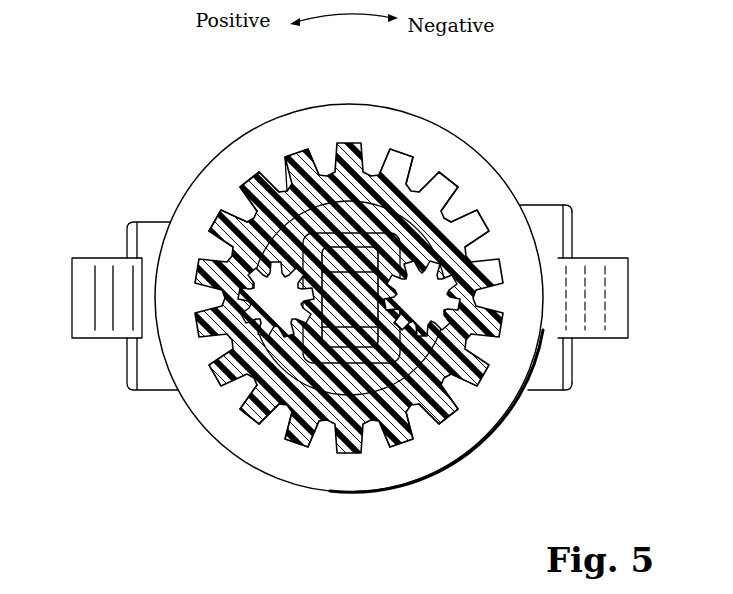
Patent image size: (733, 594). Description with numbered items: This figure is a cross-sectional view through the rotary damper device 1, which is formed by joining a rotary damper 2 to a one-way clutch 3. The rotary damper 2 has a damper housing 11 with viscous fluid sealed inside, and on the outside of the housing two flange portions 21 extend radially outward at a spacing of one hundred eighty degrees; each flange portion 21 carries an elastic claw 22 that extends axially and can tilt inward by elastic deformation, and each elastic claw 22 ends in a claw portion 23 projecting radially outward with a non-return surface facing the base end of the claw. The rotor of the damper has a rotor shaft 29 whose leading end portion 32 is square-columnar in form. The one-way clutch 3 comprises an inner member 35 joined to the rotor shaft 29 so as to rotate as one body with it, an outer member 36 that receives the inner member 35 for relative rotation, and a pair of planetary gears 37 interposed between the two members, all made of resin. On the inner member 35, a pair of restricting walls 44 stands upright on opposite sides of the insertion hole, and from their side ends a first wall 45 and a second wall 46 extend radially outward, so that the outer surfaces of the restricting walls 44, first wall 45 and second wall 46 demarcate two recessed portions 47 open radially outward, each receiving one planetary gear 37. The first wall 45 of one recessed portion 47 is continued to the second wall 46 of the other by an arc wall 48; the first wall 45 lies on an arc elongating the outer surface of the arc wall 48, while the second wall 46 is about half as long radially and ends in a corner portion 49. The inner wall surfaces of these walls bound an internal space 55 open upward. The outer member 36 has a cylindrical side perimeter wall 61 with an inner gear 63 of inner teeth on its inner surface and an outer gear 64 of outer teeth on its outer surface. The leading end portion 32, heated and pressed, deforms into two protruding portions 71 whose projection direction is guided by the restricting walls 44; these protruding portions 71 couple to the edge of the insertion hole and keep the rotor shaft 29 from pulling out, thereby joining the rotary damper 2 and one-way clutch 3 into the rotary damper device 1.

The rotary damper device 1 is at (539, 68).
The rotary damper 2 is at (555, 205).
The one-way clutch 3 is at (381, 162).
The damper housing 11 is at (473, 456).
The flange portion 21 is at (545, 368).
The elastic claw 22 is at (601, 340).
The claw portion 23 is at (618, 326).
The rotor shaft 29 is at (237, 268).
The leading end portion 32 is at (325, 232).
The inner member 35 is at (412, 205).
The outer member 36 is at (463, 218).
The planetary gear 37 is at (262, 298).
The restricting wall 44 is at (366, 348).
The first wall 45 is at (240, 388).
The second wall 46 is at (287, 157).
The recessed portion 47 is at (255, 327).
The arc wall 48 is at (403, 157).
The corner portion 49 is at (215, 235).
The internal space 55 is at (272, 408).
The side perimeter wall 61 is at (250, 183).
The inner gear 63 is at (222, 210).
The outer gear 64 is at (292, 193).
The protruding portion 71 is at (360, 257).